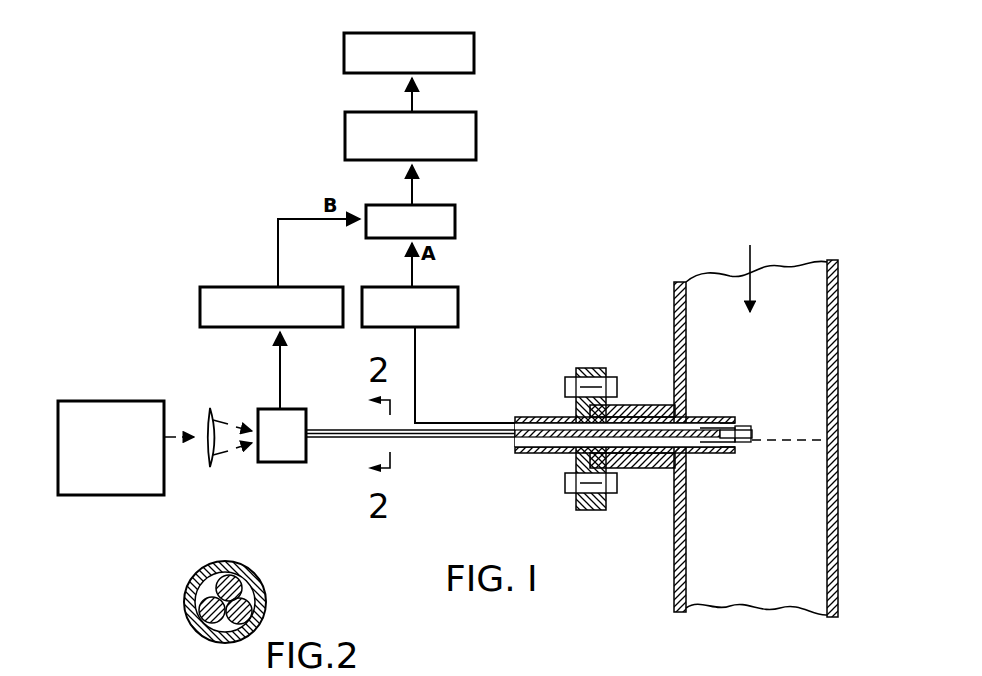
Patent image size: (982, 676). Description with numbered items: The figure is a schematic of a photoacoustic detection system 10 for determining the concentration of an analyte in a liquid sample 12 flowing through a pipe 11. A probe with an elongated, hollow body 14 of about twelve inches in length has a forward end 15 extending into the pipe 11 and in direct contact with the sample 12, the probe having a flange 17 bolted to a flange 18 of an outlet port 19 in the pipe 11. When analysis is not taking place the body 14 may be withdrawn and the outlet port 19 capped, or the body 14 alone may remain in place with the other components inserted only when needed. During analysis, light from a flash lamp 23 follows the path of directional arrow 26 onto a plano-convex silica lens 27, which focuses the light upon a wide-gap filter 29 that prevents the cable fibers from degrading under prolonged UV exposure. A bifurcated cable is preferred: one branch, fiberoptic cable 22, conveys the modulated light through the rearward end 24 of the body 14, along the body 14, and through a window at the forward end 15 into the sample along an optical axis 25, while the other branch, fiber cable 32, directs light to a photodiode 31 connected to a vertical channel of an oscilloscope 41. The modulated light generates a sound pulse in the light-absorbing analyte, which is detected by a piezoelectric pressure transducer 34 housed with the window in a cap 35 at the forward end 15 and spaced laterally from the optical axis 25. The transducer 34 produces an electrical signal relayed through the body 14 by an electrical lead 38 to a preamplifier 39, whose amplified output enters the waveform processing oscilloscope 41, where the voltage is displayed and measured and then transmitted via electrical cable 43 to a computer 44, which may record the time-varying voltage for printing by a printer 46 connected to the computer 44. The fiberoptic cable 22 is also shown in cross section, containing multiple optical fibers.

In FIG. 1, the photoacoustic detection system 10 is at (658, 95).
In FIG. 1, the pipe 11 is at (827, 300).
In FIG. 1, the liquid sample 12 is at (752, 300).
In FIG. 1, the hollow body 14 is at (514, 456).
In FIG. 1, the forward end 15 is at (714, 458).
In FIG. 1, the flange 17 is at (576, 377).
In FIG. 1, the flange 18 is at (606, 360).
In FIG. 1, the outlet port 19 is at (635, 405).
In FIG. 1, the fiberoptic cable 22 is at (330, 440).
In FIG. 2, the fiberoptic cable 22 is at (258, 573).
In FIG. 1, the flash lamp 23 is at (111, 448).
In FIG. 1, the rearward end 24 is at (516, 417).
In FIG. 1, the optical axis 25 is at (768, 442).
In FIG. 1, the directional arrow 26 is at (184, 437).
In FIG. 1, the lens 27 is at (217, 407).
In FIG. 1, the filter 29 is at (282, 435).
In FIG. 1, the photodiode 31 is at (236, 270).
In FIG. 1, the fiber cable 32 is at (281, 375).
In FIG. 1, the pressure transducer 34 is at (745, 418).
In FIG. 1, the cap 35 is at (722, 418).
In FIG. 1, the electrical lead 38 is at (416, 368).
In FIG. 1, the preamplifier 39 is at (459, 300).
In FIG. 1, the oscilloscope 41 is at (456, 226).
In FIG. 1, the electrical cable 43 is at (413, 185).
In FIG. 1, the computer 44 is at (477, 152).
In FIG. 1, the printer 46 is at (475, 68).